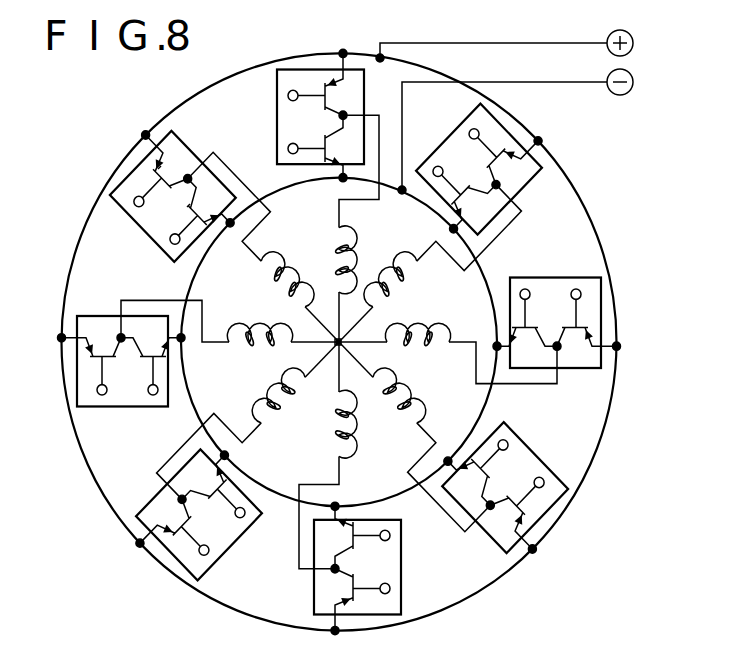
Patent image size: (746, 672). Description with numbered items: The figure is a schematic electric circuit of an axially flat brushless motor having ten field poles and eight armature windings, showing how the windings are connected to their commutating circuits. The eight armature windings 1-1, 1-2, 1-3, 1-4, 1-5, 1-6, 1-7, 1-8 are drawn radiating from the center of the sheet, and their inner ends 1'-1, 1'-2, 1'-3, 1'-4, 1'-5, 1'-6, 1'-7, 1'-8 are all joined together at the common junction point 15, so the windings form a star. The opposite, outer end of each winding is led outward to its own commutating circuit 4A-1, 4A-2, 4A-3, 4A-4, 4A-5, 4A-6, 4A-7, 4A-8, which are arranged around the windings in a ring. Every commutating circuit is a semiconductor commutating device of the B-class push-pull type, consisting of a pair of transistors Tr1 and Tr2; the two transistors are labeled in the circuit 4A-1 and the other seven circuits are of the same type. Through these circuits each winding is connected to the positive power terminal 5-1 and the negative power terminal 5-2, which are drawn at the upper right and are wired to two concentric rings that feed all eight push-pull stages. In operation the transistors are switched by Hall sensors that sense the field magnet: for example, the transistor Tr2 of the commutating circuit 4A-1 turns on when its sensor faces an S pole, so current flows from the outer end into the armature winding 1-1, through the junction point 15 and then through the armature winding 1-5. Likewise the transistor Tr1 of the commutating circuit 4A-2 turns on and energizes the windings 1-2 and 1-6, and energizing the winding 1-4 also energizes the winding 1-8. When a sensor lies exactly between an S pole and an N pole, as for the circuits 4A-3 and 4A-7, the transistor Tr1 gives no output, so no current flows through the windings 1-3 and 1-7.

The commutating circuit 4A-1 is at (128, 215).
The commutating circuit 4A-2 is at (271, 100).
The commutating circuit 4A-3 is at (480, 168).
The commutating circuit 4A-4 is at (515, 277).
The commutating circuit 4A-5 is at (523, 440).
The commutating circuit 4A-6 is at (402, 578).
The commutating circuit 4A-7 is at (226, 560).
The commutating circuit 4A-8 is at (110, 407).
The transistor Tr1 is at (175, 162).
The transistor Tr2 is at (207, 192).
The armature winding 1-1 is at (283, 258).
The armature winding 1-2 is at (348, 242).
The armature winding 1-3 is at (410, 282).
The armature winding 1-4 is at (433, 345).
The armature winding 1-5 is at (420, 408).
The armature winding 1-6 is at (350, 452).
The armature winding 1-7 is at (256, 404).
The armature winding 1-8 is at (236, 322).
The one end of armature winding 1'-1 is at (304, 321).
The one end of armature winding 1'-2 is at (364, 296).
The one end of armature winding 1'-3 is at (388, 322).
The one end of armature winding 1'-4 is at (392, 368).
The one end of armature winding 1'-5 is at (375, 393).
The one end of armature winding 1'-6 is at (317, 389).
The one end of armature winding 1'-7 is at (285, 364).
The one end of armature winding 1'-8 is at (270, 354).
The junction point 15 is at (336, 345).
The positive power terminal 5-1 is at (630, 35).
The negative power terminal 5-2 is at (630, 73).